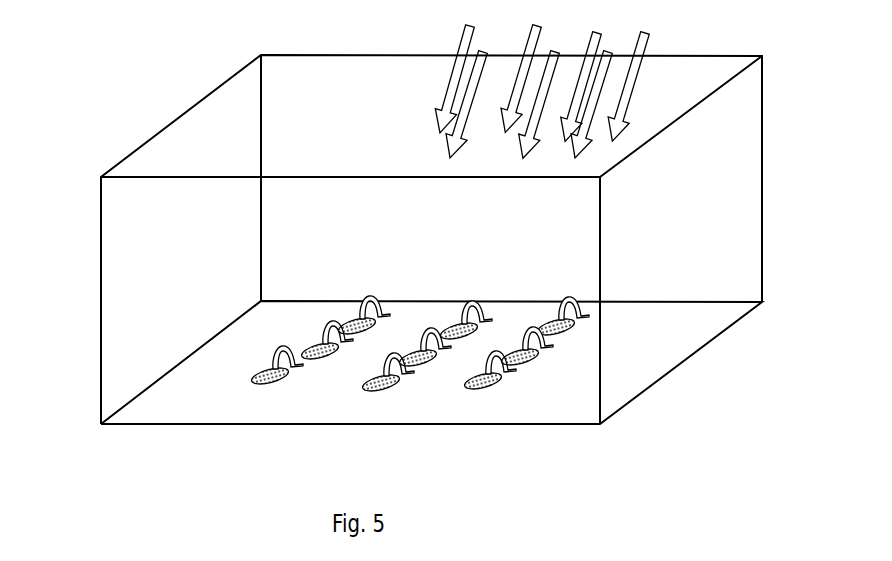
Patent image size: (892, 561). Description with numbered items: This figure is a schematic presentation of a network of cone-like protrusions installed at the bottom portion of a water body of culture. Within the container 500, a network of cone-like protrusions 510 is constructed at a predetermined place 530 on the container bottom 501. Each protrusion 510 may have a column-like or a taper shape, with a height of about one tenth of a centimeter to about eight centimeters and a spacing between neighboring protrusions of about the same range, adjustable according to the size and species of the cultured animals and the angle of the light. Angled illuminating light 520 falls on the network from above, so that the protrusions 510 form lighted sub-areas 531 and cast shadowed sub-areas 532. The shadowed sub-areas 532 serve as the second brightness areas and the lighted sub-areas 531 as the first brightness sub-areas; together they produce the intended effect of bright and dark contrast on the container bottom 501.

The container 500 is at (223, 83).
The container bottom 501 is at (178, 387).
The cone-like protrusion 510 is at (548, 346).
The angled illuminating light 520 is at (458, 62).
The predetermined place 530 is at (505, 389).
The lighted sub-area 531 is at (440, 368).
The shadowed sub-area 532 is at (393, 388).